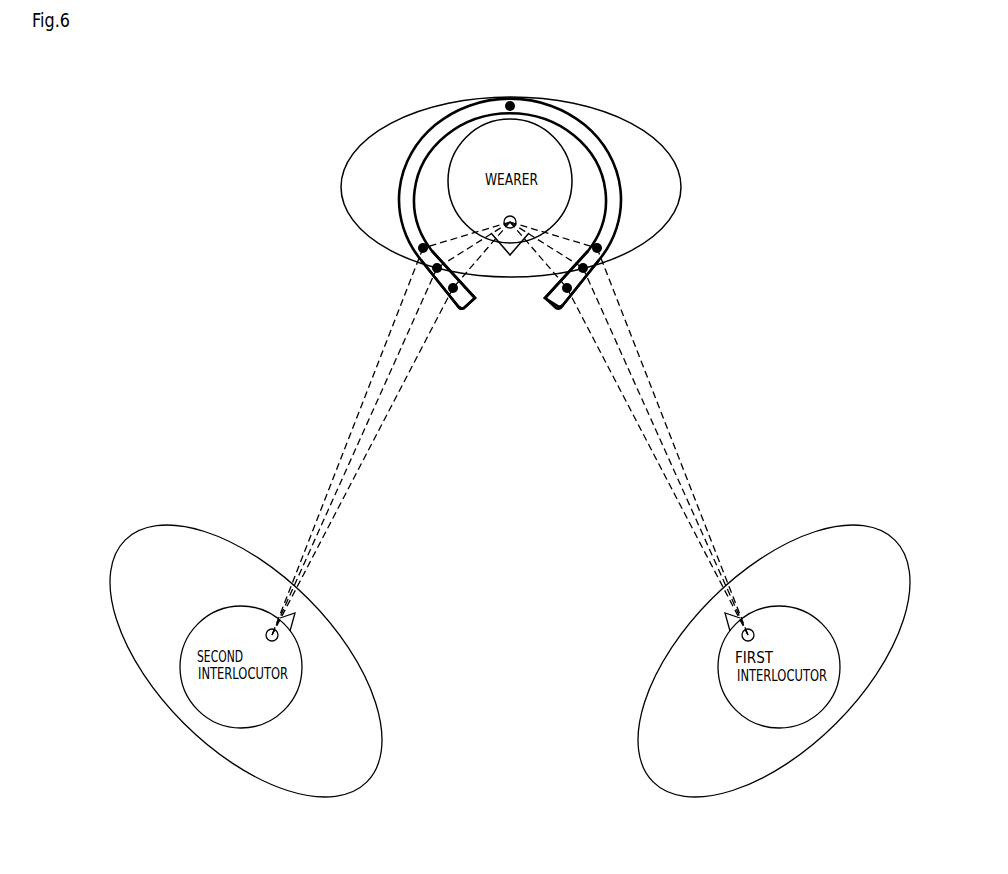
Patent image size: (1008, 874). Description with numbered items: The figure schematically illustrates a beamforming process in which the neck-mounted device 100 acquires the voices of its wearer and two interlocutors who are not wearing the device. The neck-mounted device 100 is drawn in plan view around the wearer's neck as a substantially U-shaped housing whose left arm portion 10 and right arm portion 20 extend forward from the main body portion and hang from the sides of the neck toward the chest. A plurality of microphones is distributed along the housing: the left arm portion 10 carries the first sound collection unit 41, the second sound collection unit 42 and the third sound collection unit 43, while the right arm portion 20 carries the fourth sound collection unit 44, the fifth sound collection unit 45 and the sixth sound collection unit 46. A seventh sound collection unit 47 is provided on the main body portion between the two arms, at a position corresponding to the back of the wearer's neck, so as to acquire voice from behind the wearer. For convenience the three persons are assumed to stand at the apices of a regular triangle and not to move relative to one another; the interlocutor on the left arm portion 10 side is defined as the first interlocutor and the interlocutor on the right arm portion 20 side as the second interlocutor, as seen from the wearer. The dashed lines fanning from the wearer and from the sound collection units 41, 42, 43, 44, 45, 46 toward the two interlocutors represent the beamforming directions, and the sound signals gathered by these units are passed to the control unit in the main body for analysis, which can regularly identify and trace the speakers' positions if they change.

The neck-mounted device 100 is at (582, 114).
The left arm portion 10 is at (640, 190).
The right arm portion 20 is at (380, 190).
The first sound collection unit 41 is at (570, 289).
The second sound collection unit 42 is at (586, 268).
The third sound collection unit 43 is at (600, 248).
The fourth sound collection unit 44 is at (450, 289).
The fifth sound collection unit 45 is at (434, 268).
The sixth sound collection unit 46 is at (420, 248).
The seventh sound collection unit 47 is at (508, 103).